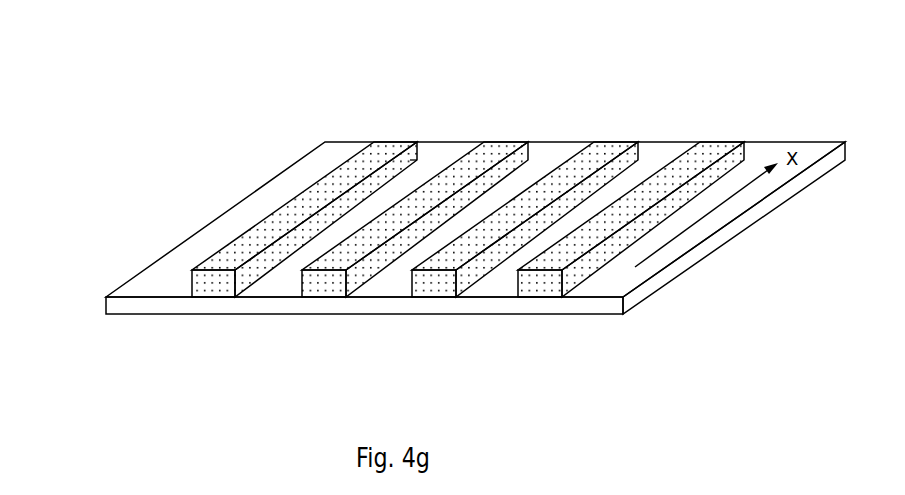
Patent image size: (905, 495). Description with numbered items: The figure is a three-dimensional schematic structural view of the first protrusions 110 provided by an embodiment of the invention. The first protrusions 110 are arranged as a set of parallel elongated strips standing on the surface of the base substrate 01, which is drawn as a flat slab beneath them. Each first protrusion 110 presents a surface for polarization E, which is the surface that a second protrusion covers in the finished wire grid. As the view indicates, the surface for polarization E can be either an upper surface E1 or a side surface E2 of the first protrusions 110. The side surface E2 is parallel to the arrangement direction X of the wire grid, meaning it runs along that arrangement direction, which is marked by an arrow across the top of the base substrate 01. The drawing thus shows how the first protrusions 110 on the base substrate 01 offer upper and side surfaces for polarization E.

The base substrate 01 is at (113, 310).
The surface for polarization E is at (464, 200).
The upper surface E1 is at (392, 157).
The side surface E2 is at (415, 196).
The first protrusions 110 is at (300, 228).